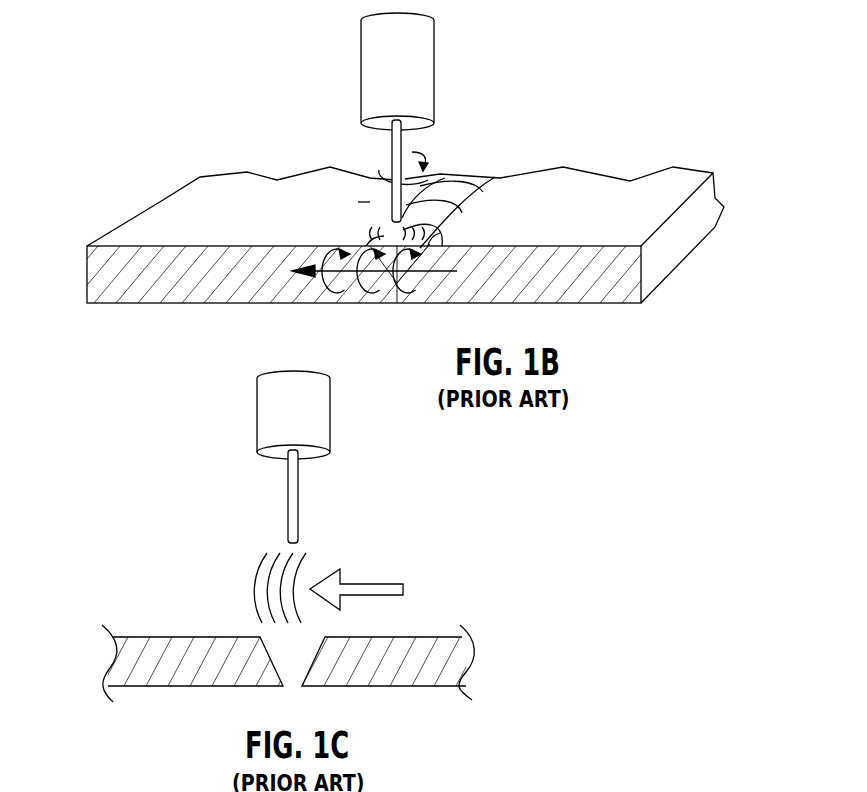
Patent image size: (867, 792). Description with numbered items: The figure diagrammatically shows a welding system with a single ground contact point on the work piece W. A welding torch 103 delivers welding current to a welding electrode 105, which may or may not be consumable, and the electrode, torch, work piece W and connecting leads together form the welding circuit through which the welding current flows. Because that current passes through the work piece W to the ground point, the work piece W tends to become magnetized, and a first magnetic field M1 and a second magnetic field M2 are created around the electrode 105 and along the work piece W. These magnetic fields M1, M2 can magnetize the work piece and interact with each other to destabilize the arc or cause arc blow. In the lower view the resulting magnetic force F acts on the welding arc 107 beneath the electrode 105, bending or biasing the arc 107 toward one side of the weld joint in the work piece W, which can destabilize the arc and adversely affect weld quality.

In FIG. 1B, the welding torch 103 is at (422, 62).
In FIG. 1C, the welding torch 103 is at (312, 413).
In FIG. 1B, the welding electrode 105 is at (403, 137).
In FIG. 1C, the welding electrode 105 is at (293, 498).
In FIG. 1C, the welding arc 107 is at (258, 578).
In FIG. 1B, the work piece W is at (568, 197).
In FIG. 1C, the work piece W is at (397, 687).
In FIG. 1B, the first magnetic field M1 is at (375, 163).
In FIG. 1B, the second magnetic field M2 is at (420, 281).
In FIG. 1C, the magnetic force F is at (366, 589).